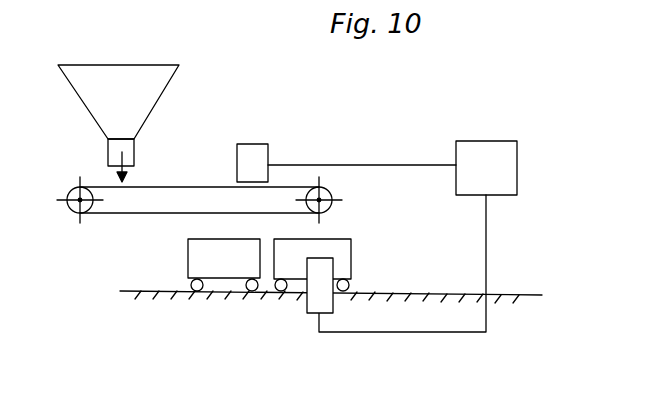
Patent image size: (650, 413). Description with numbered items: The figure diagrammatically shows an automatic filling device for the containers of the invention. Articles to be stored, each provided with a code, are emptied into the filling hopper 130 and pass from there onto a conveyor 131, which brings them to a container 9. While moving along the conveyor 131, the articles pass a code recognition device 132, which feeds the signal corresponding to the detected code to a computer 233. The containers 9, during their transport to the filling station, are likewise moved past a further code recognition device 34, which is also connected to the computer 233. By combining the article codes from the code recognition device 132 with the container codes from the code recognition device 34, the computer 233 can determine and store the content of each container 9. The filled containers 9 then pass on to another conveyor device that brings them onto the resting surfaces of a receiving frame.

The filling hopper 130 is at (93, 93).
The conveyor 131 is at (187, 183).
The code recognition device 132 is at (261, 153).
The computer 233 is at (488, 158).
The container 9 is at (290, 260).
The code recognition device 34 is at (316, 300).